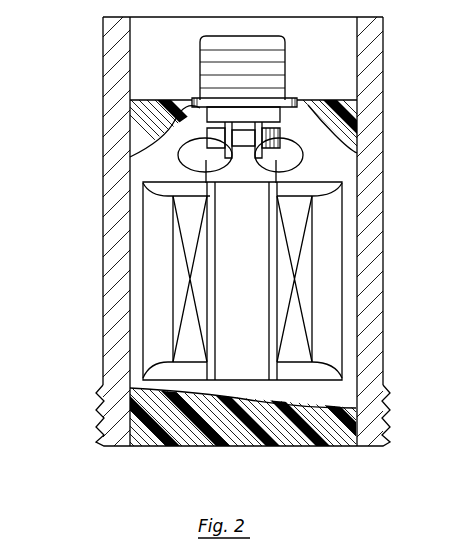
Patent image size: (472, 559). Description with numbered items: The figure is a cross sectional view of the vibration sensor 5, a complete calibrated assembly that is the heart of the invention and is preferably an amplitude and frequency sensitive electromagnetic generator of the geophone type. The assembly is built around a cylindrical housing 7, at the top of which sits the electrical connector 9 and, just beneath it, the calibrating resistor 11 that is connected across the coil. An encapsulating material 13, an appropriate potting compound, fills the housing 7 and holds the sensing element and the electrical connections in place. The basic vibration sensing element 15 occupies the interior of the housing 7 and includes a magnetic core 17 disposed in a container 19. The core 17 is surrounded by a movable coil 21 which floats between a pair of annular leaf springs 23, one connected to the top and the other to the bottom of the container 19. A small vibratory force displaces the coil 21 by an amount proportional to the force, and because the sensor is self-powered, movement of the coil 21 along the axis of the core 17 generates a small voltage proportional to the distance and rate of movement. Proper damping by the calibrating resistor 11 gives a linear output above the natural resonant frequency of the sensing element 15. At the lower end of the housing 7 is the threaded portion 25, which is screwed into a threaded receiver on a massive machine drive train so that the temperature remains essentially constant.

The vibration sensor 5 is at (98, 149).
The housing 7 is at (383, 276).
The electrical connector 9 is at (286, 50).
The calibrating resistor 11 is at (280, 137).
The encapsulating material 13 is at (355, 423).
The vibration sensing element 15 is at (128, 319).
The magnetic core 17 is at (250, 300).
The container 19 is at (200, 383).
The movable coil 21 is at (290, 350).
The annular leaf springs 23 is at (318, 197).
The threaded portion 25 is at (92, 420).